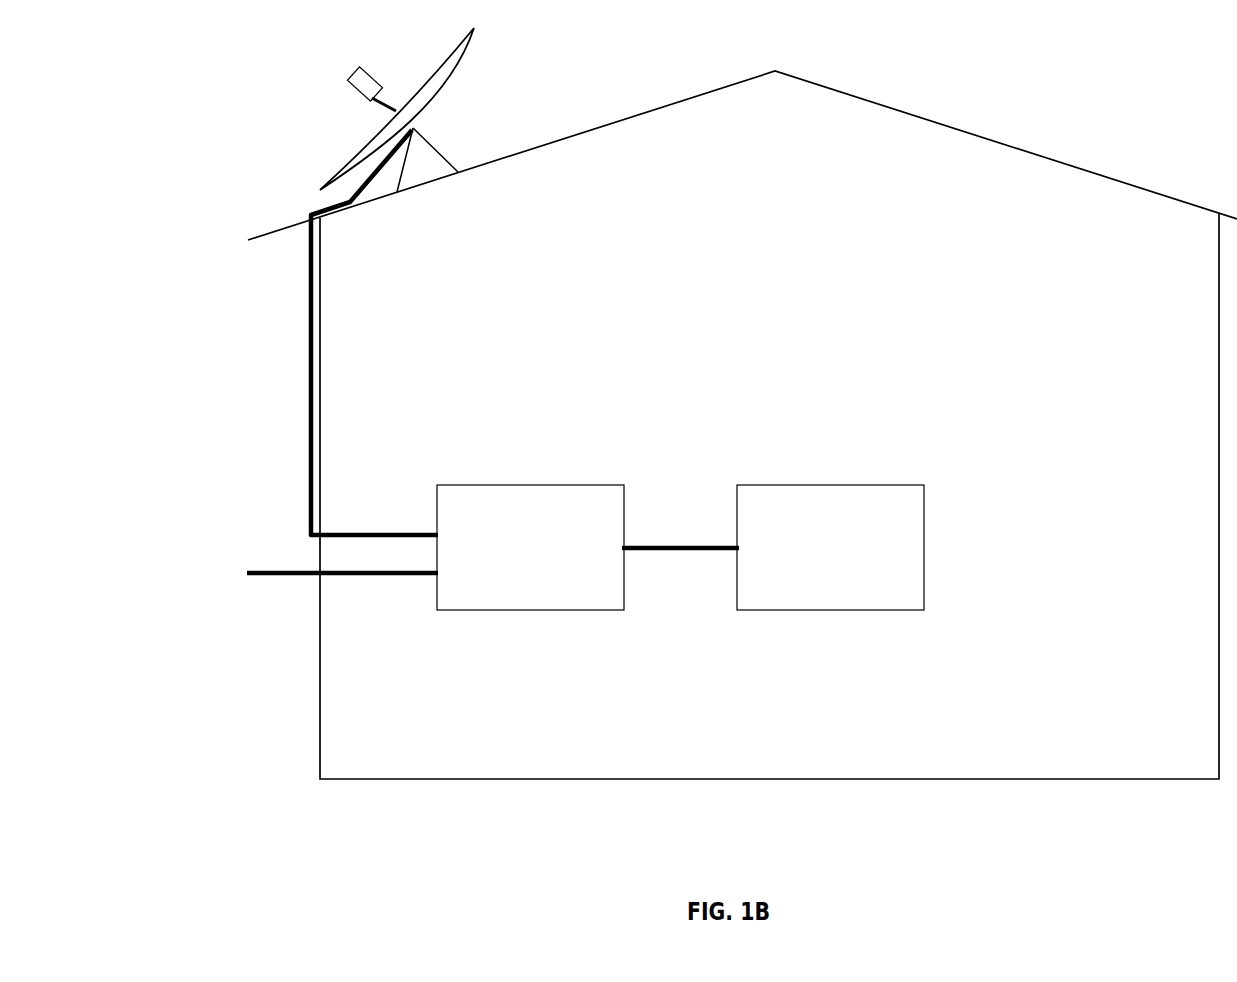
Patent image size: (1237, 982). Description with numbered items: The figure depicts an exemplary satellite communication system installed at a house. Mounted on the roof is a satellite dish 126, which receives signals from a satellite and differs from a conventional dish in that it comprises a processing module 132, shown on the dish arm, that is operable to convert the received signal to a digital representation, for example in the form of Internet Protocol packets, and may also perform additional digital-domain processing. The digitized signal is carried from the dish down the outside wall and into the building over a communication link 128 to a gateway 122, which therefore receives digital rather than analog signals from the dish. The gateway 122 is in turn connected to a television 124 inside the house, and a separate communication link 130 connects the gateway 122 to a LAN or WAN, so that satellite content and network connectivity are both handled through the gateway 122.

The gateway 122 is at (513, 568).
The television 124 is at (847, 570).
The satellite dish 126 is at (452, 53).
The communication link 128 is at (310, 325).
The communication link 130 is at (288, 572).
The processing module 132 is at (357, 72).